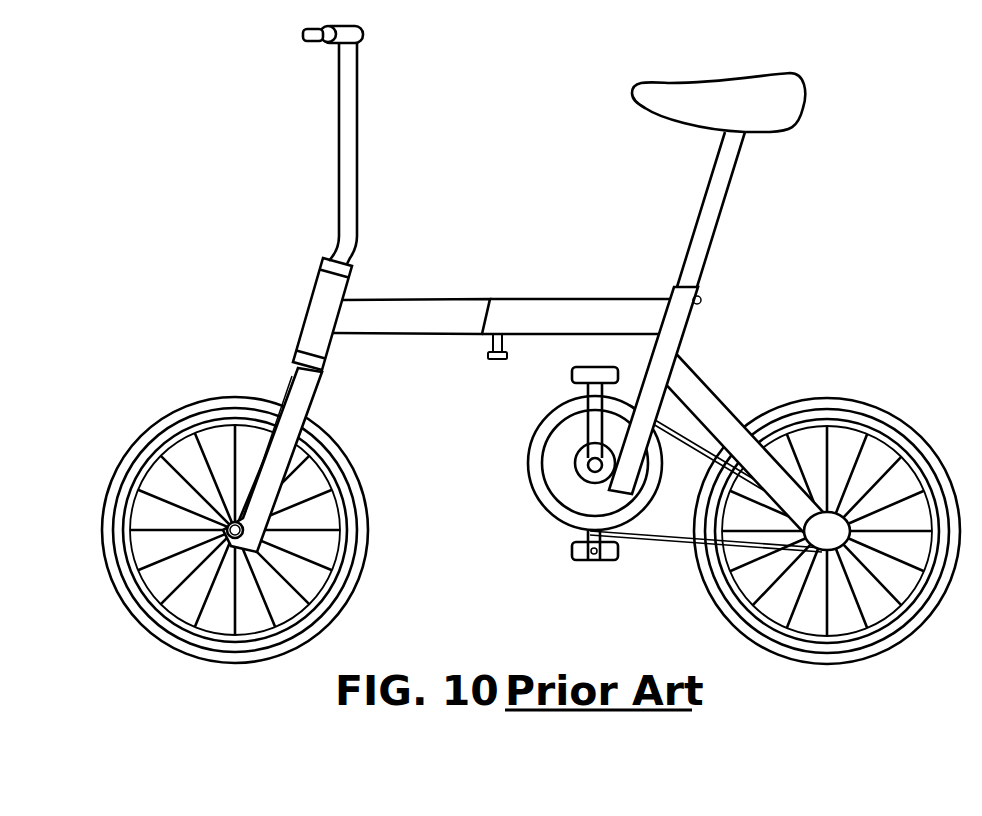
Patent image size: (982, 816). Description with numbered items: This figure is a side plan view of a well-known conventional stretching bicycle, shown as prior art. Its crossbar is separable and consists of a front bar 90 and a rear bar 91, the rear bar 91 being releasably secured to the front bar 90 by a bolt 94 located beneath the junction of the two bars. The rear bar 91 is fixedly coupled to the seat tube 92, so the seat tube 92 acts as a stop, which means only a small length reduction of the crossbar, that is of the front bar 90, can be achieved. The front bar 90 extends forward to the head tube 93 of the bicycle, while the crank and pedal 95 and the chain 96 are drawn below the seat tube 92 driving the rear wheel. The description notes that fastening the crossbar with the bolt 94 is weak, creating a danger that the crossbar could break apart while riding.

The front bar 90 is at (410, 300).
The rear bar 91 is at (601, 298).
The seat tube 92 is at (677, 327).
The head tube 93 is at (317, 308).
The bolt 94 is at (497, 361).
The pedal 95 is at (572, 556).
The chain 96 is at (655, 537).